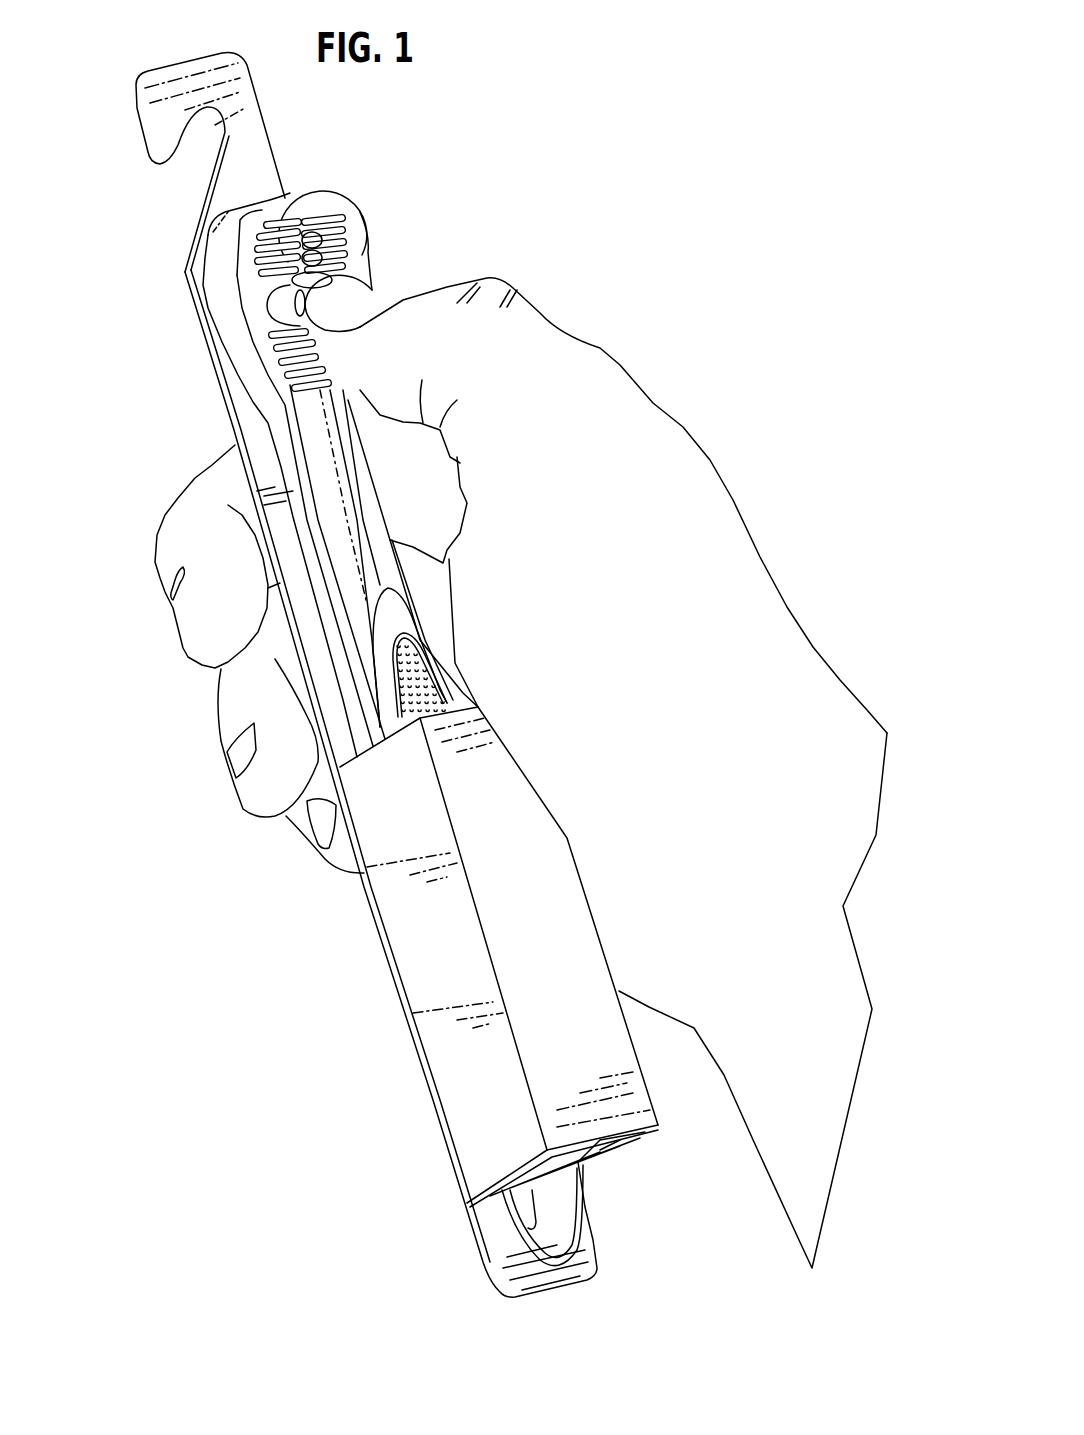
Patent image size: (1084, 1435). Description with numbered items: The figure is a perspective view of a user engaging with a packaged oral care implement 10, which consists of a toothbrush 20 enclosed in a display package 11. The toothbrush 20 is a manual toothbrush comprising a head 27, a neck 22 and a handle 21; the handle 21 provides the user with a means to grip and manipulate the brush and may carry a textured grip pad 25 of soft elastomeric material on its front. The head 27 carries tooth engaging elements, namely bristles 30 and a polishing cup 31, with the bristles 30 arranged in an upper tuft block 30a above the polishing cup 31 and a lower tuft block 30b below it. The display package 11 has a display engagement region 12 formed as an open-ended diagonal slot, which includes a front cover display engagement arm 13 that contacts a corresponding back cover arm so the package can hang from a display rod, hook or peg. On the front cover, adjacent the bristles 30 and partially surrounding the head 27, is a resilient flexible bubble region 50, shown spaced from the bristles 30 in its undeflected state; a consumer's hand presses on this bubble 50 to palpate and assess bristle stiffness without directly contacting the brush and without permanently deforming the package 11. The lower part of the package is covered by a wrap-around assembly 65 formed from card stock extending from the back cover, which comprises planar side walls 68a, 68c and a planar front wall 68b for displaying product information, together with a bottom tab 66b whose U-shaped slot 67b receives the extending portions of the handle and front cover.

The packaged oral care implement 10 is at (233, 865).
The display package 11 is at (353, 898).
The display engagement region 12 is at (187, 162).
The front cover display engagement arm 13 is at (236, 88).
The toothbrush 20 is at (345, 572).
The handle 21 is at (361, 641).
The neck 22 is at (313, 443).
The grip pad 25 is at (430, 683).
The head 27 is at (224, 283).
The bristles 30 is at (340, 214).
The upper tuft block 30a is at (342, 238).
The lower tuft block 30b is at (275, 363).
The polishing cup 31 is at (275, 312).
The flexible bubble region 50 is at (410, 266).
The wrap-around assembly 65 is at (567, 913).
The bottom tab 66b is at (603, 1160).
The U-shaped slot 67b is at (537, 1163).
The side wall 68a is at (447, 1072).
The front wall 68b is at (546, 934).
The side wall 68c is at (645, 1079).